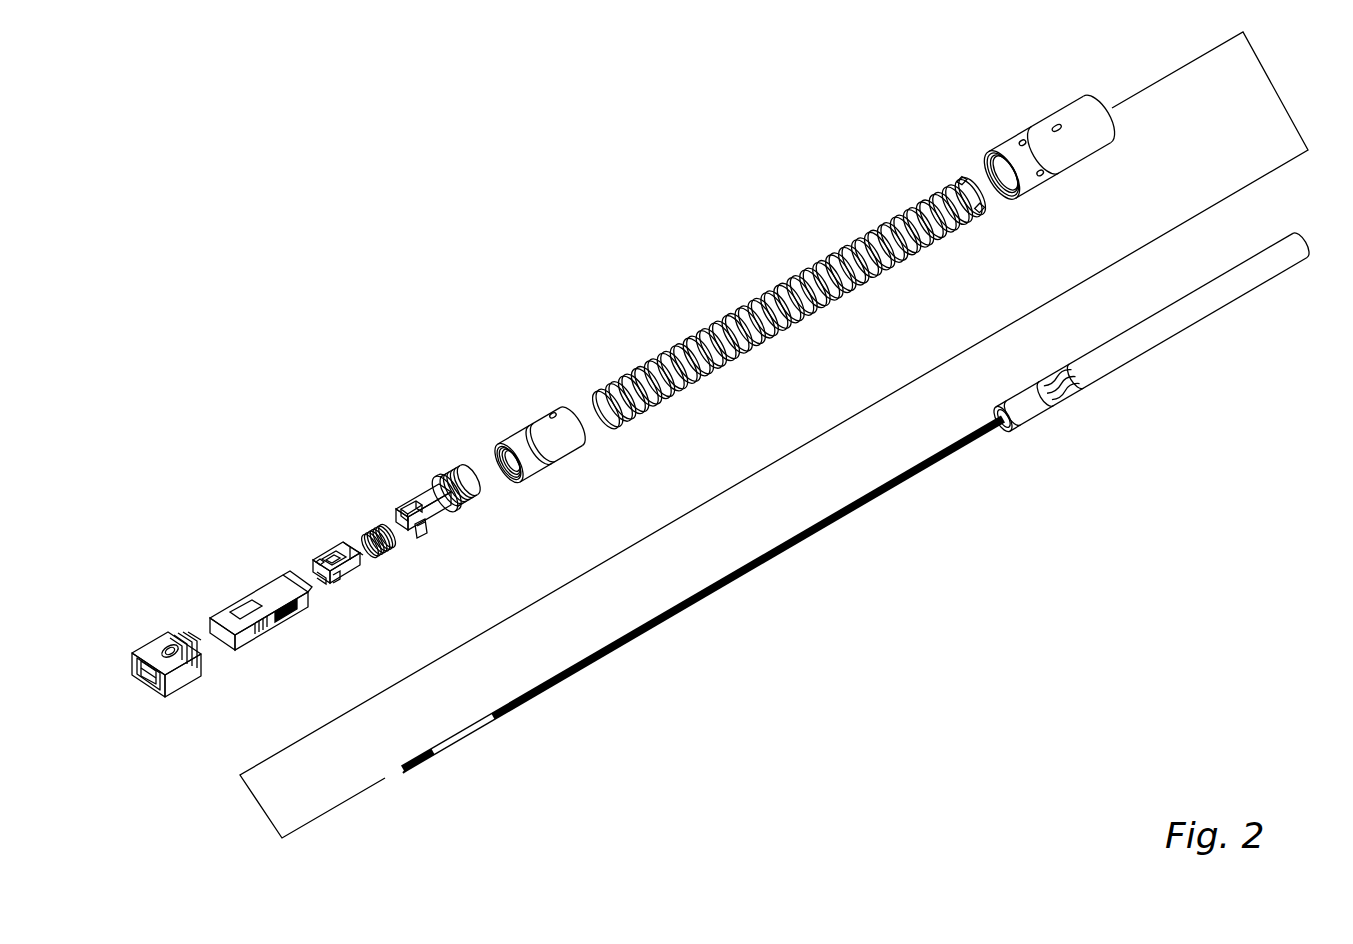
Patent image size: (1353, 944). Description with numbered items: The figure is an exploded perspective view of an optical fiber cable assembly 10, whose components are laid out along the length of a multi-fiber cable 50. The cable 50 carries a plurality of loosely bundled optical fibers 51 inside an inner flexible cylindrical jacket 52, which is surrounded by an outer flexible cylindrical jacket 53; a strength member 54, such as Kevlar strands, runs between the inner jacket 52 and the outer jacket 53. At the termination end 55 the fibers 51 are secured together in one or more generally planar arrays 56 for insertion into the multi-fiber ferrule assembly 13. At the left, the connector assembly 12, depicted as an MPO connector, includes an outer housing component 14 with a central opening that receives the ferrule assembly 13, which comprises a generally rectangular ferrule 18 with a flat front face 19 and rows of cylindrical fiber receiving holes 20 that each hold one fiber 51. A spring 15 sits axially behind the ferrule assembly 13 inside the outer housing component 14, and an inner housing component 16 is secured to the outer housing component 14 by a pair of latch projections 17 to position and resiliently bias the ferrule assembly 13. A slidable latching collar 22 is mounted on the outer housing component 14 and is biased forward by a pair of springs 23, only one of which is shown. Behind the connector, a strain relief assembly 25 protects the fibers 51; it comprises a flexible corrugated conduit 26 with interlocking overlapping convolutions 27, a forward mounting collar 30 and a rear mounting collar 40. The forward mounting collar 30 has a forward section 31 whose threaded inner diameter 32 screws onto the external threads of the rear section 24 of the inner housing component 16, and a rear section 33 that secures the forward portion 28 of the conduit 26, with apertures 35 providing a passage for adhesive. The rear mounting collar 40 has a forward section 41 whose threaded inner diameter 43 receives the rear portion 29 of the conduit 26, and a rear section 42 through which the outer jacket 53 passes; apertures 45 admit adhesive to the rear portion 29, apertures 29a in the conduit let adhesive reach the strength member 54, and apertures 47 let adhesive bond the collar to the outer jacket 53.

The optical fiber cable assembly 10 is at (434, 316).
The connector assembly 12 is at (266, 445).
The multi-fiber ferrule assembly 13 is at (309, 594).
The outer housing component 14 is at (260, 617).
The spring 15 is at (385, 549).
The inner housing component 16 is at (441, 499).
The latch projections 17 is at (422, 533).
The ferrule 18 is at (328, 582).
The front face 19 is at (318, 575).
The optical fiber receiving holes 20 is at (322, 586).
The slidable latching collar 22 is at (190, 680).
The springs 23 is at (285, 622).
The rear section 24 is at (452, 480).
The strain relief assembly 25 is at (599, 215).
The flexible conduit 26 is at (772, 272).
The convolutions 27 is at (776, 310).
The forward portion 28 is at (607, 409).
The rear portion 29 is at (970, 197).
The apertures 29a is at (971, 195).
The forward mounting collar 30 is at (530, 461).
The forward section 31 is at (508, 463).
The threaded inner diameter 32 is at (511, 461).
The rear section 33 is at (537, 446).
The apertures 35 is at (553, 415).
The rear mounting collar 40 is at (1070, 156).
The forward section 41 is at (1002, 175).
The rear section 42 is at (1054, 144).
The threaded inner diameter 43 is at (1004, 173).
The apertures 45 is at (1031, 158).
The apertures 47 is at (1056, 127).
The multi-fiber cable 50 is at (1151, 359).
The optical fibers 51 is at (698, 619).
The inner jacket 52 is at (1005, 418).
The outer jacket 53 is at (1154, 330).
The strength member 54 is at (1058, 386).
The termination end 55 is at (405, 763).
The planar arrays 56 is at (440, 745).